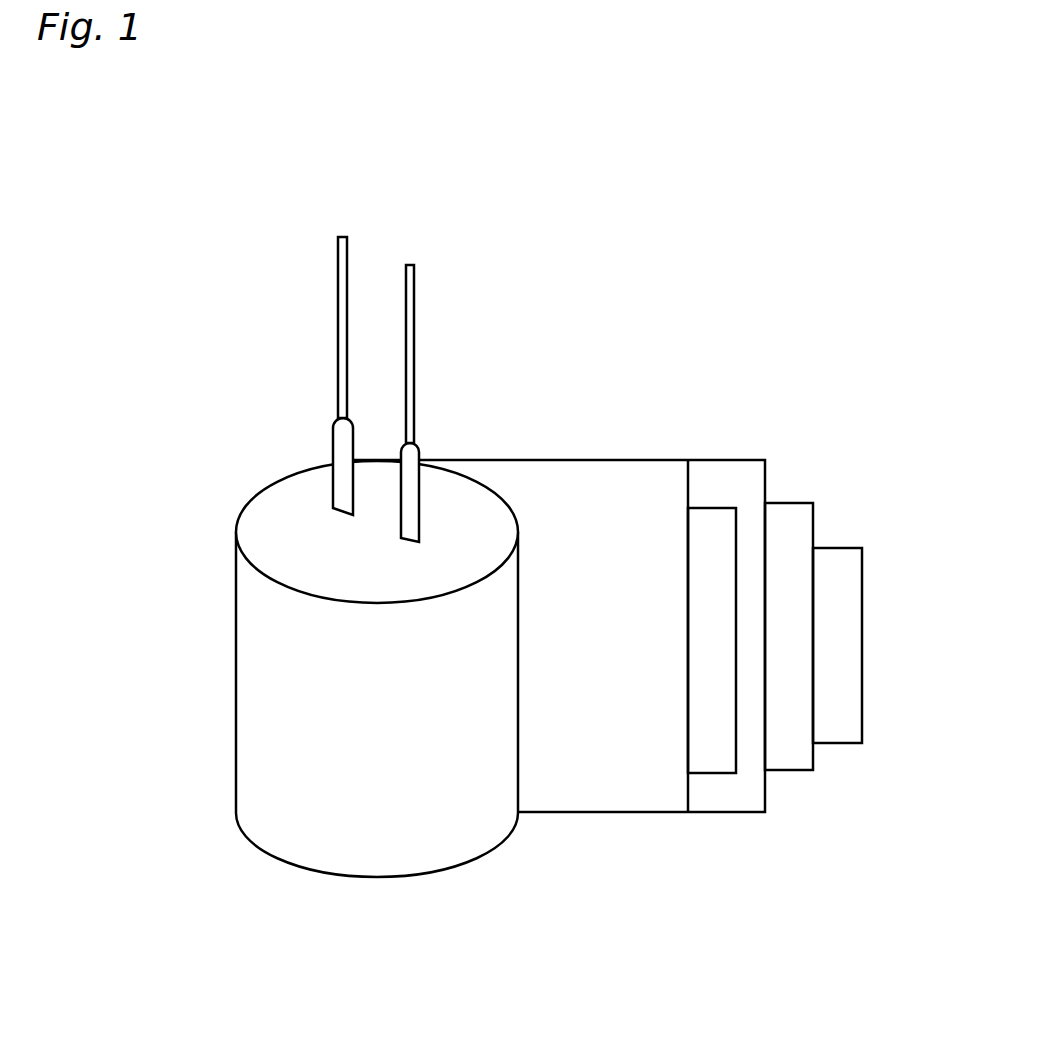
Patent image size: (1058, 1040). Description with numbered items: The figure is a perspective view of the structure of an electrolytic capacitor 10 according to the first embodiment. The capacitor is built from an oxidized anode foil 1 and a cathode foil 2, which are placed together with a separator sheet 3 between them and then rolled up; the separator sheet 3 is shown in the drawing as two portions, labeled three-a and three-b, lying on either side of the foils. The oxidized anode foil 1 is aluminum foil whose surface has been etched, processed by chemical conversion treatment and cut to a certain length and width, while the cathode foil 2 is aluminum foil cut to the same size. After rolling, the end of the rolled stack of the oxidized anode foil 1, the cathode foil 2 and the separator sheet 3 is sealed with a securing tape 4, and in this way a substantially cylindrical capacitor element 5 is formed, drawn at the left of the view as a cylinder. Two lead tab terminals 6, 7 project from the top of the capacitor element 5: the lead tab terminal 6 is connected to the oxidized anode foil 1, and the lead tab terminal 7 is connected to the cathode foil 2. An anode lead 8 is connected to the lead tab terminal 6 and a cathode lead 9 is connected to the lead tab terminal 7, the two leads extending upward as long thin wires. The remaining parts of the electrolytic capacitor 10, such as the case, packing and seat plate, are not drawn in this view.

The electrolytic capacitor 10 is at (602, 130).
The oxidized anode foil 1 is at (712, 518).
The cathode foil 2 is at (783, 518).
The separator sheet 3 is at (745, 478).
The securing tape 4 is at (848, 637).
The capacitor element 5 is at (255, 692).
The lead tab terminal 6 is at (337, 455).
The lead tab terminal 7 is at (415, 455).
The anode lead 8 is at (342, 237).
The cathode lead 9 is at (409, 265).